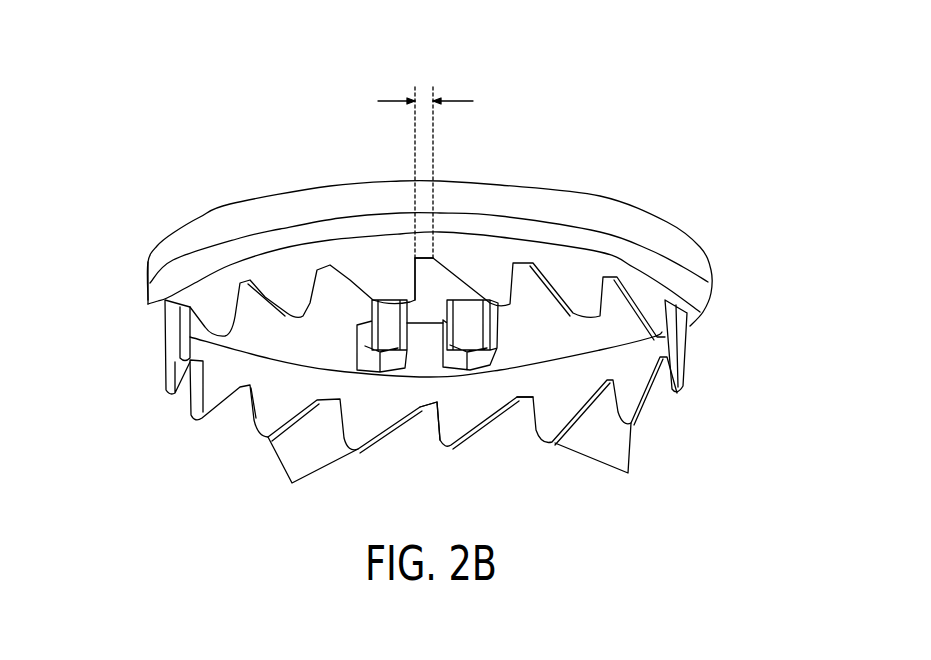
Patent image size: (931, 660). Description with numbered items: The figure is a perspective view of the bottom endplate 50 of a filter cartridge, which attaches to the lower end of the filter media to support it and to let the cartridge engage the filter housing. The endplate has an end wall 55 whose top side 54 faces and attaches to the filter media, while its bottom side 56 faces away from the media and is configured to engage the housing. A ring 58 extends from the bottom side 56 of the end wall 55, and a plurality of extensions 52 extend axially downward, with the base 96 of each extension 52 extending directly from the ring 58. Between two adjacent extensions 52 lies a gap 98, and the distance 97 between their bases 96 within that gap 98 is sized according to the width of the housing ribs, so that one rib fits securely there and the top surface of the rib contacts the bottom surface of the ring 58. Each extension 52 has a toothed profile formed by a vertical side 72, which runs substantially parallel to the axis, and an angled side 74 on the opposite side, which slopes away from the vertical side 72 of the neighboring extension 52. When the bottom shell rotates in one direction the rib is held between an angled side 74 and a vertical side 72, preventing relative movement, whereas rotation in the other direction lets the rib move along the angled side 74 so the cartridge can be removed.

The bottom endplate 50 is at (722, 174).
The extensions 52 is at (377, 280).
The top side 54 is at (597, 197).
The end wall 55 is at (712, 273).
The bottom side 56 is at (263, 333).
The ring 58 is at (167, 298).
The vertical side 72 is at (430, 425).
The angled side 74 is at (510, 413).
The base 96 is at (398, 268).
The distance 97 is at (463, 100).
The gap 98 is at (523, 398).